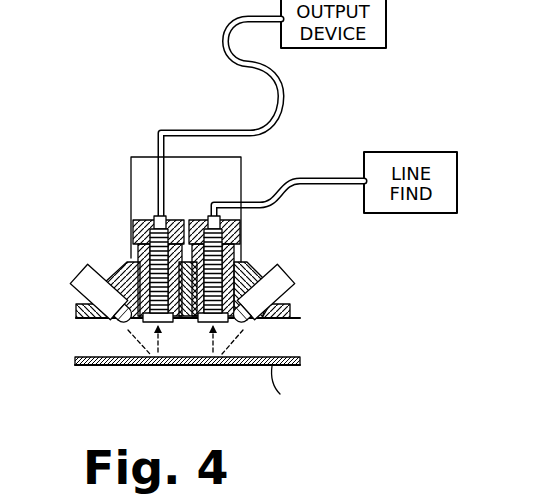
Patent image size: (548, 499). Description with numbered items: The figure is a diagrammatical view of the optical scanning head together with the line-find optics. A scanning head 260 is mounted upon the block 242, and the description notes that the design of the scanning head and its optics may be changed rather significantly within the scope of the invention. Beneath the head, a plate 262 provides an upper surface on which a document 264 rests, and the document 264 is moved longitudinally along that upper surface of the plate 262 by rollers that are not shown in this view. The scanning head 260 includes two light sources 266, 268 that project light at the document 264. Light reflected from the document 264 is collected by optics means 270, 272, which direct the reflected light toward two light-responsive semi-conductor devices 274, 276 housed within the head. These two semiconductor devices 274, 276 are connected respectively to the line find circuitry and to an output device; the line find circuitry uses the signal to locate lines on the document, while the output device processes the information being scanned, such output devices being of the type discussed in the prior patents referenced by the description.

The block 242 is at (226, 174).
The scanning head 260 is at (95, 241).
The plate 262 is at (296, 387).
The document 264 is at (294, 353).
The light source 266 is at (295, 290).
The light source 268 is at (79, 283).
The optics means 270 is at (242, 282).
The optics means 272 is at (134, 293).
The light-responsive semi-conductor device 274 is at (244, 250).
The light-responsive semi-conductor device 276 is at (126, 250).